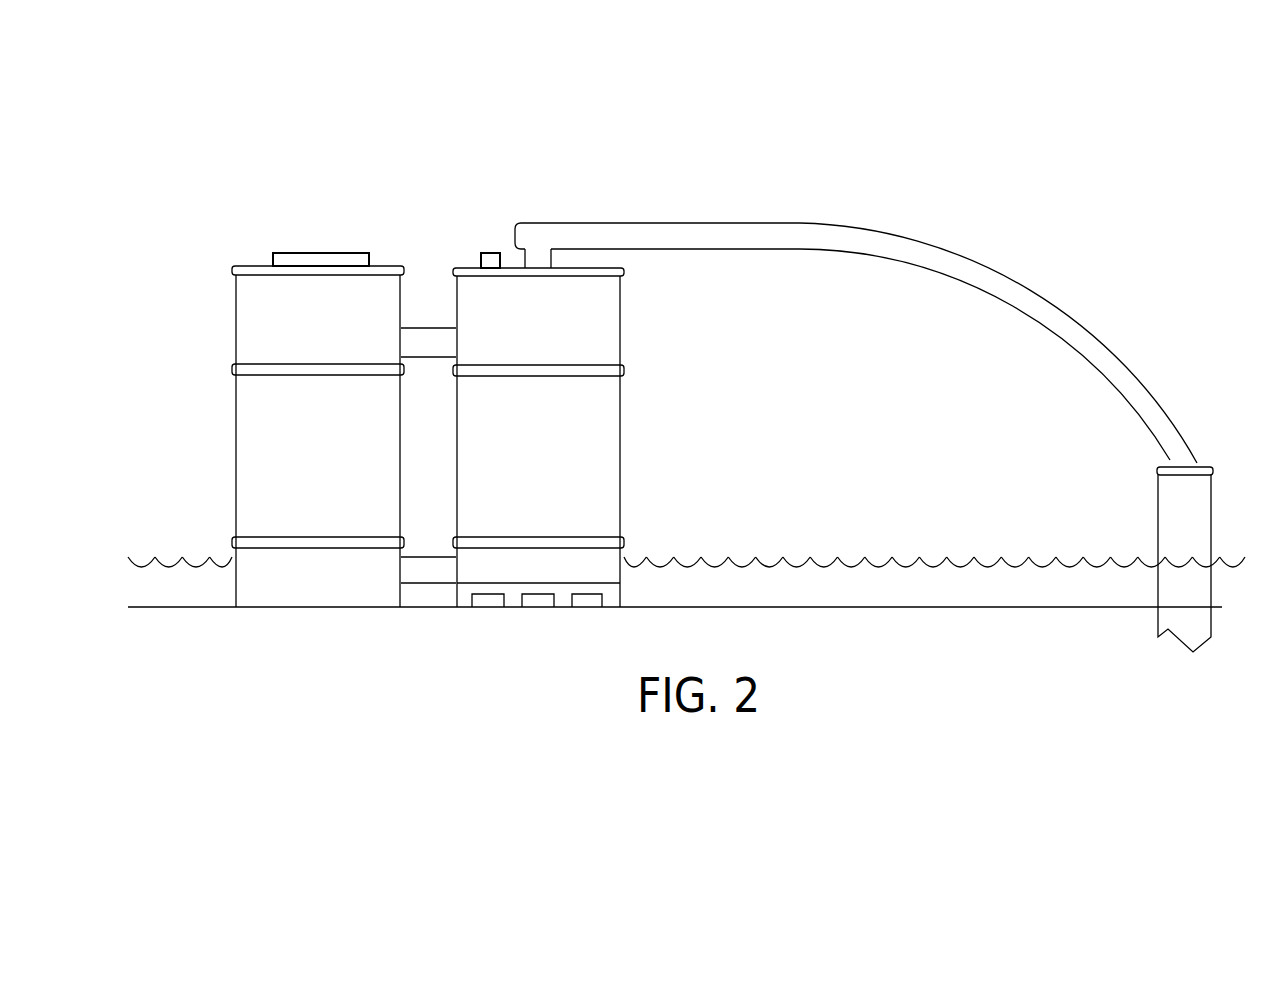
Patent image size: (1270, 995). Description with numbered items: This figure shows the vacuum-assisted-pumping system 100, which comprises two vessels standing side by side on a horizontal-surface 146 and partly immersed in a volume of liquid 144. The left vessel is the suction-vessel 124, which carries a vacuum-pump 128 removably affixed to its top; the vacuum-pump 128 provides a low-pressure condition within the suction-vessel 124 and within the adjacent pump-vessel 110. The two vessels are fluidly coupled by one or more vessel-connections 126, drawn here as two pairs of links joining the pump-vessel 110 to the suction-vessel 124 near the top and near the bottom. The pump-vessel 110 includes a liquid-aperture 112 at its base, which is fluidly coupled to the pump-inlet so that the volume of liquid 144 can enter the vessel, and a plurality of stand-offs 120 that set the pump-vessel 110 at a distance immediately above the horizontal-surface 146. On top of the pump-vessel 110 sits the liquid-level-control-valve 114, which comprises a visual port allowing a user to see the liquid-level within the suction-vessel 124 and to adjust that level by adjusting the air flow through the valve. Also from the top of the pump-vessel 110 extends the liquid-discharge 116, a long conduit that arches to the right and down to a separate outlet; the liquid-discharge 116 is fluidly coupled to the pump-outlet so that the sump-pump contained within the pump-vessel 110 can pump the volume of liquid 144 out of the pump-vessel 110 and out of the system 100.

The vacuum-assisted-pumping system 100 is at (1038, 220).
The pump-vessel 110 is at (508, 157).
The liquid-aperture 112 is at (588, 604).
The liquid-level-control-valve 114 is at (486, 252).
The liquid-discharge 116 is at (900, 242).
The stand-offs 120 is at (515, 602).
The suction-vessel 124 is at (233, 307).
The vessel-connections 126 is at (423, 346).
The vacuum-pump 128 is at (355, 253).
The volume of liquid 144 is at (744, 575).
The horizontal-surface 146 is at (893, 607).